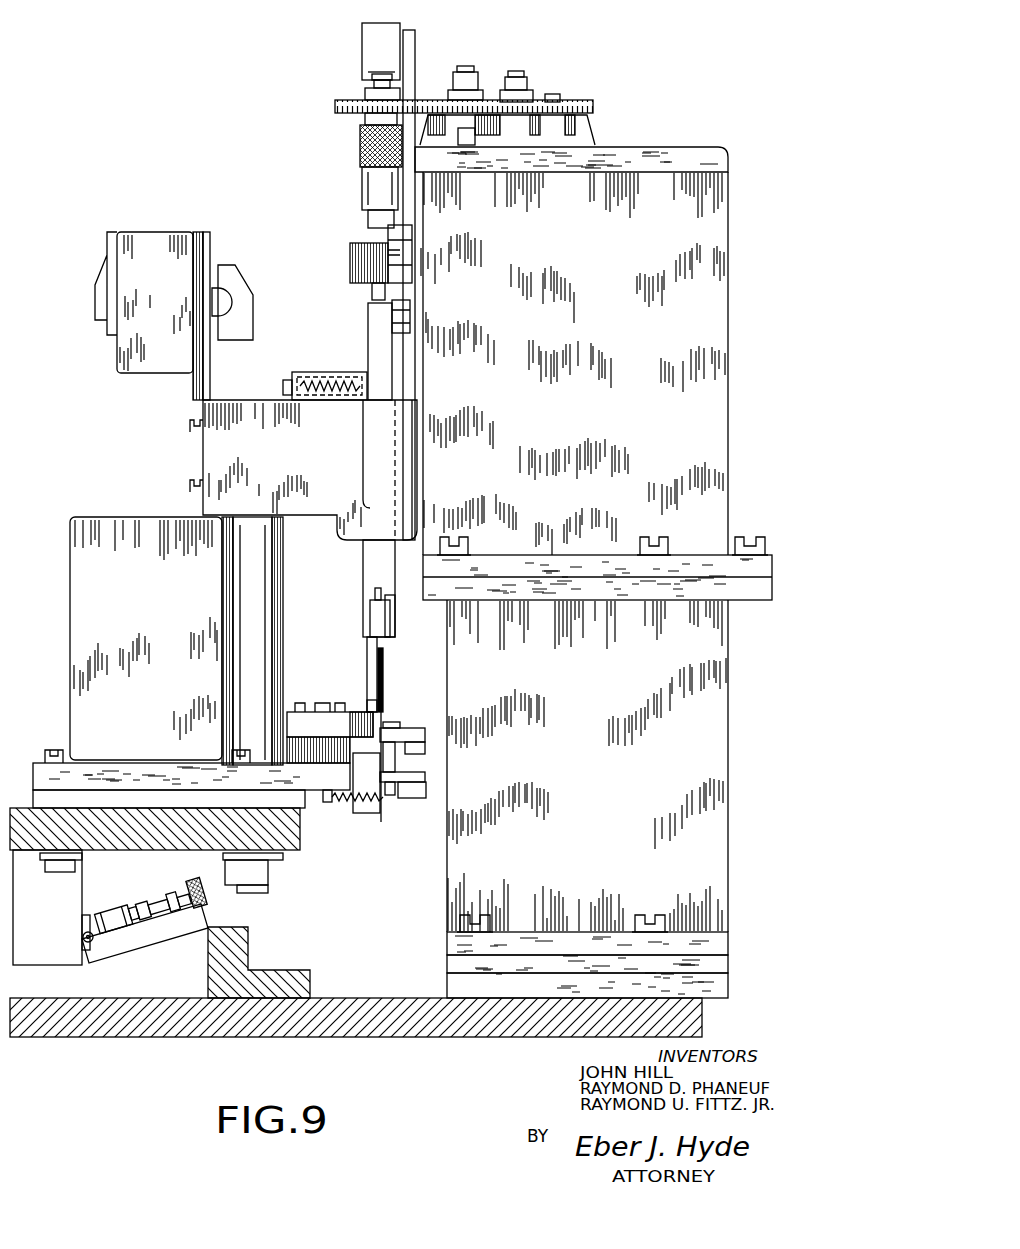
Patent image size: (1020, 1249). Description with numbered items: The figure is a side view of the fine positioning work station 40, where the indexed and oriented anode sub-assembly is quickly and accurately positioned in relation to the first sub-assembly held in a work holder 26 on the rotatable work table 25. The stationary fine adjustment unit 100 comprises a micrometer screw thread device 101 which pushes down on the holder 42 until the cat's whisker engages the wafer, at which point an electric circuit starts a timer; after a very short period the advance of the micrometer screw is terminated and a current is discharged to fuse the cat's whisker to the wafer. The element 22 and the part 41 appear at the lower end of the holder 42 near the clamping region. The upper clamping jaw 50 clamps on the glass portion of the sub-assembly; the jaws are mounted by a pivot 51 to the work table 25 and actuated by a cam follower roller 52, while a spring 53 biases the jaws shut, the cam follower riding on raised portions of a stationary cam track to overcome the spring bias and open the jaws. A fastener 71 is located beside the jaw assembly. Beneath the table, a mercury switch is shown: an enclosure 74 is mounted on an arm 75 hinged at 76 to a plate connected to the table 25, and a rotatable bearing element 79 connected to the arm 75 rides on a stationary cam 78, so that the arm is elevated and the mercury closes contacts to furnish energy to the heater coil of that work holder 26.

The fine adjustment unit 100 is at (528, 30).
The fine positioning work station 40 is at (622, 147).
The micrometer screw thread device 101 is at (358, 152).
The work holder 26 is at (140, 236).
The holder 42 is at (375, 328).
The blade 22 is at (383, 668).
The spindle tip 41 is at (373, 706).
The upper clamping jaw 50 is at (410, 728).
The pivot 51 is at (395, 716).
The cam follower roller 52 is at (425, 742).
The spring 53 is at (348, 800).
The screw 71 is at (428, 798).
The work table 25 is at (300, 850).
The enclosure 74 is at (116, 912).
The arm 75 is at (174, 928).
The hinge 76 is at (88, 946).
The stationary cam 78 is at (249, 948).
The rotatable bearing element 79 is at (213, 898).